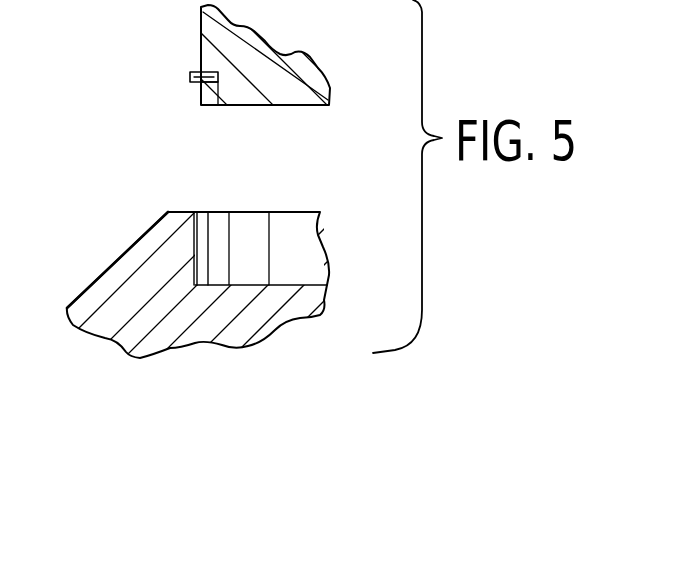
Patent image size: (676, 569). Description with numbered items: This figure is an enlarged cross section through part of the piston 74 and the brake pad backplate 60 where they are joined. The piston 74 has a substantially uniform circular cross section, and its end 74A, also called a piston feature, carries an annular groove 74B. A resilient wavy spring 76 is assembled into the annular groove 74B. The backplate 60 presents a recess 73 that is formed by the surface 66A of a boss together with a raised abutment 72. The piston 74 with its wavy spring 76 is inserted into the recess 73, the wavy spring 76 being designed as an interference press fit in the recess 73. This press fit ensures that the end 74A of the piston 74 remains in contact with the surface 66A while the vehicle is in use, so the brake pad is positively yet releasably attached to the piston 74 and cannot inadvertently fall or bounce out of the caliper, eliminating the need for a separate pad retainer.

The body / housing portion 60 is at (135, 297).
The surface of the boss 66A is at (278, 285).
The raised abutment 72 is at (195, 240).
The recess 73 is at (300, 232).
The piston 74 is at (210, 27).
The end of the piston 74A is at (298, 97).
The annular groove 74B is at (218, 78).
The wavy spring 76 is at (190, 78).